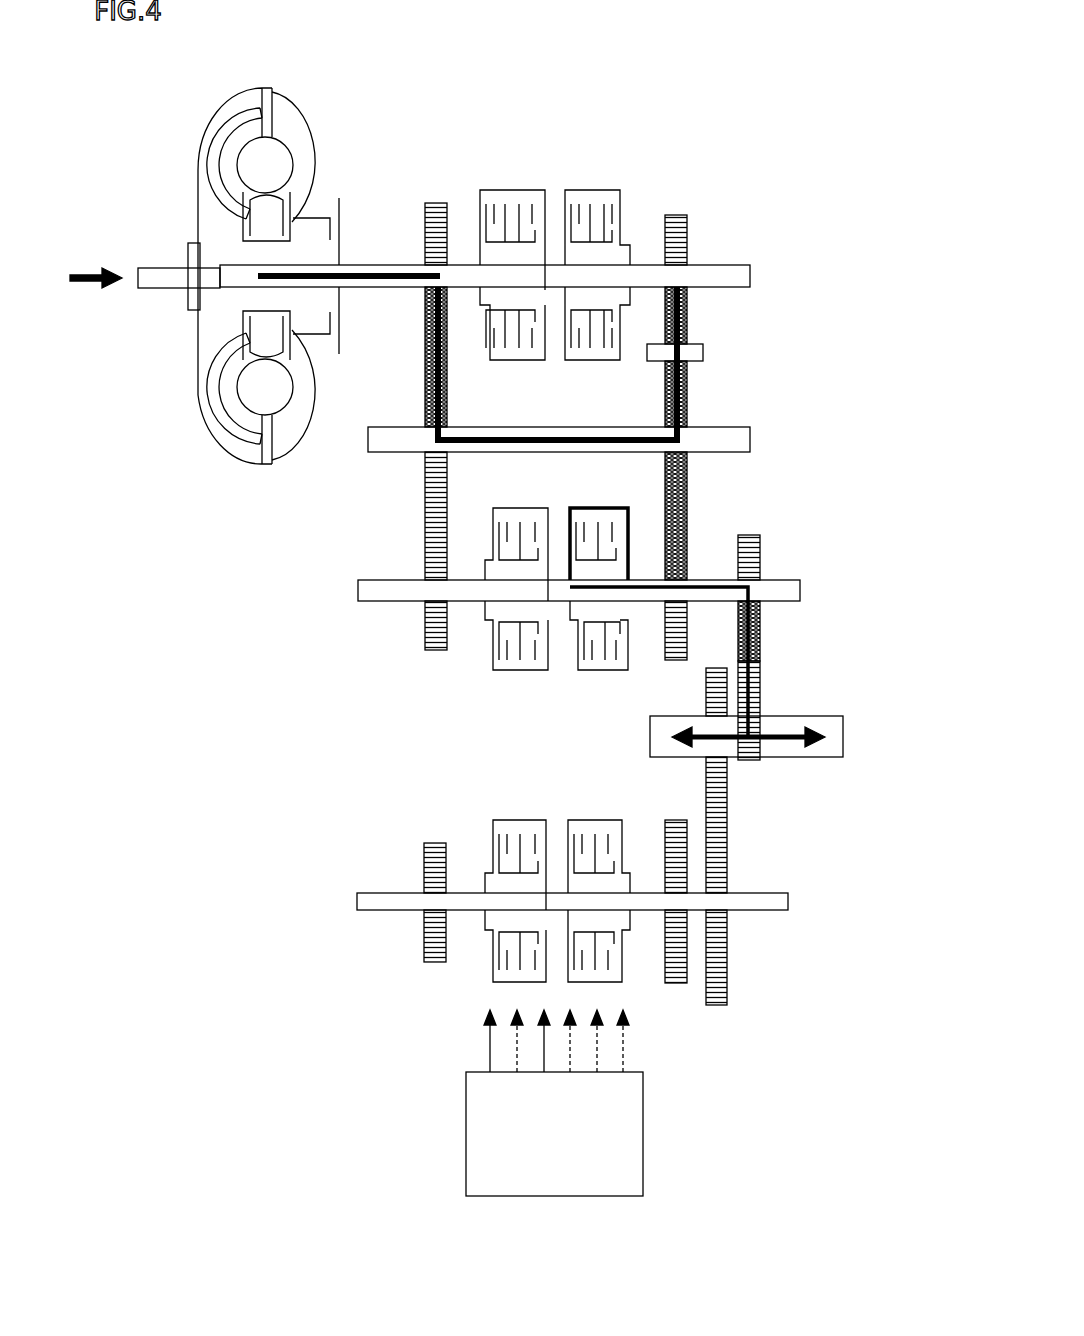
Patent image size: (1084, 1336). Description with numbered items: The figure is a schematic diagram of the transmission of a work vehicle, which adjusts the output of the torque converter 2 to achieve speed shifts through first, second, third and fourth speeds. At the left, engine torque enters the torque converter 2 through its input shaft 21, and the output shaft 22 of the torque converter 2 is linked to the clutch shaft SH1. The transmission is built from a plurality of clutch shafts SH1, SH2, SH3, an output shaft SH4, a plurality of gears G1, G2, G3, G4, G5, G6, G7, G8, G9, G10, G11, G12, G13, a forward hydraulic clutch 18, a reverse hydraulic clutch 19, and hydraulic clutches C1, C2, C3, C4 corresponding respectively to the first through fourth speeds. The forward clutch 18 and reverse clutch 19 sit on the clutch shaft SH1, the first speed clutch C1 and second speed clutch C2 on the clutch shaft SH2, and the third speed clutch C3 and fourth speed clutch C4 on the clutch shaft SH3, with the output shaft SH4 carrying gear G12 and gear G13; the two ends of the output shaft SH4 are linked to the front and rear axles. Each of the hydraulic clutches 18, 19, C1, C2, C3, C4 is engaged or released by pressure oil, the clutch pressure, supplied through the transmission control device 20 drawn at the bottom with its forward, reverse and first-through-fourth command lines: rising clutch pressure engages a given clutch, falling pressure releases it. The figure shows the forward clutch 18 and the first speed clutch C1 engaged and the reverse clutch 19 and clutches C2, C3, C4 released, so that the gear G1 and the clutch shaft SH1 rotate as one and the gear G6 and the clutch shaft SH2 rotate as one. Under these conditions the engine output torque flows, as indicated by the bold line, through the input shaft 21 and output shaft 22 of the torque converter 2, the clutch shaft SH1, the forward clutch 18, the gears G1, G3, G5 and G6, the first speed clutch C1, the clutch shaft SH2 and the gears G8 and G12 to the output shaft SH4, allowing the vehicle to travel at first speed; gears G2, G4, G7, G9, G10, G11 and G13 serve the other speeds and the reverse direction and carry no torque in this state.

The torque converter 2 is at (262, 88).
The forward clutch 18 is at (480, 200).
The reverse clutch 19 is at (622, 212).
The transmission control device 20 is at (556, 1197).
The input shaft 21 is at (160, 266).
The output shaft 22 is at (365, 264).
The gear G1 is at (428, 212).
The gear G2 is at (686, 214).
The gear G3 is at (425, 372).
The gear G4 is at (690, 342).
The gear G5 is at (688, 395).
The gear G6 is at (690, 502).
The gear G7 is at (425, 565).
The gear G8 is at (760, 540).
The gear G9 is at (675, 984).
The gear G10 is at (430, 843).
The gear G11 is at (727, 985).
The gear G12 is at (760, 690).
The gear G13 is at (706, 790).
The clutch shaft SH1 is at (750, 270).
The clutch shaft SH2 is at (800, 588).
The clutch shaft SH3 is at (788, 893).
The output shaft SH4 is at (843, 722).
The first speed clutch C1 is at (600, 671).
The second speed clutch C2 is at (507, 671).
The third speed clutch C3 is at (578, 982).
The fourth speed clutch C4 is at (496, 820).